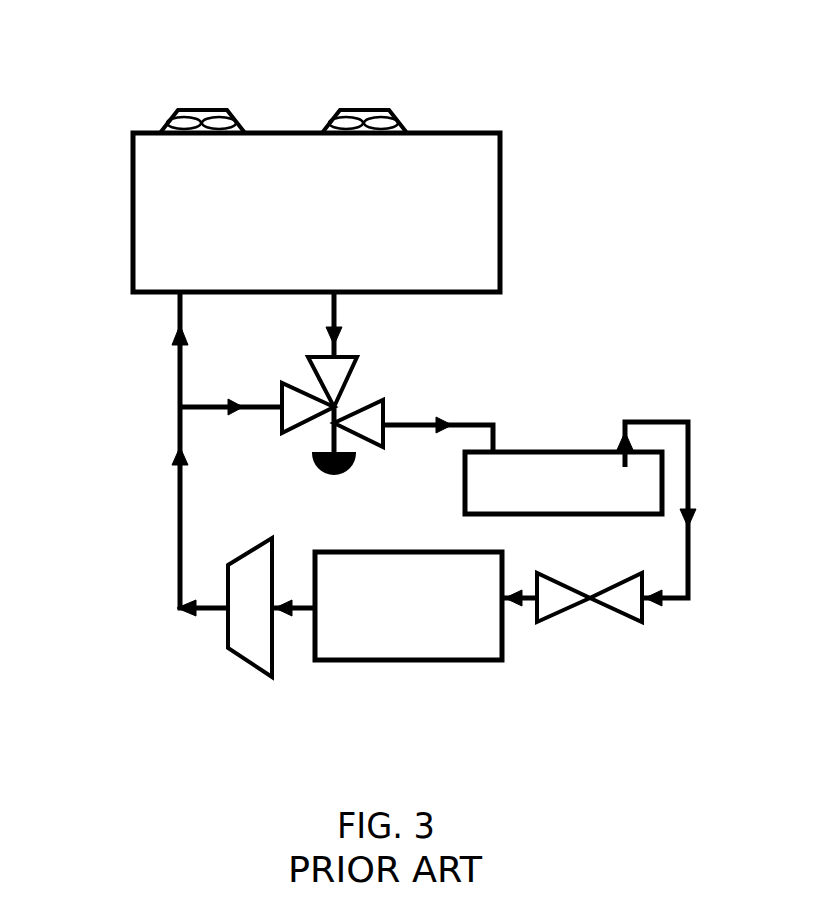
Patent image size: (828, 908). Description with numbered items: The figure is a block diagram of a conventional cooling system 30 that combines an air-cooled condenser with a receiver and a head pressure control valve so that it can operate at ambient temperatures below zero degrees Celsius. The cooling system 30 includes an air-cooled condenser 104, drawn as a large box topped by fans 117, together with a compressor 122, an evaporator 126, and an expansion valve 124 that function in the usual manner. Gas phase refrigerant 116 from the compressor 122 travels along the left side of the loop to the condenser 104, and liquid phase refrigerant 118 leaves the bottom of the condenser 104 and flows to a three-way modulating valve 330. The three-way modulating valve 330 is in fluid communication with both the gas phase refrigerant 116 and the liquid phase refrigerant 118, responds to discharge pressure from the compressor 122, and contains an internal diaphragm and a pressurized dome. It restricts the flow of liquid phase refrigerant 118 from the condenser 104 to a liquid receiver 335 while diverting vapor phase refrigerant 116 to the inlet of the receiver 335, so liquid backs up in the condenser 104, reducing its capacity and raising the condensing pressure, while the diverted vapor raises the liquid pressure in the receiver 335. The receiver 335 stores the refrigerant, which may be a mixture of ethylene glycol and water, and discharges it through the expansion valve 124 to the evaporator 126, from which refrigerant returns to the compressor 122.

The cooling system 30 is at (110, 65).
The air-cooled condenser 104 is at (500, 178).
The fan 117 is at (242, 120).
The liquid phase refrigerant 118 is at (327, 305).
The three-way modulating valve 330 is at (367, 378).
The liquid receiver 335 is at (538, 447).
The gas phase refrigerant 116 is at (172, 528).
The compressor 122 is at (220, 630).
The expansion valve 124 is at (593, 612).
The evaporator 126 is at (393, 663).